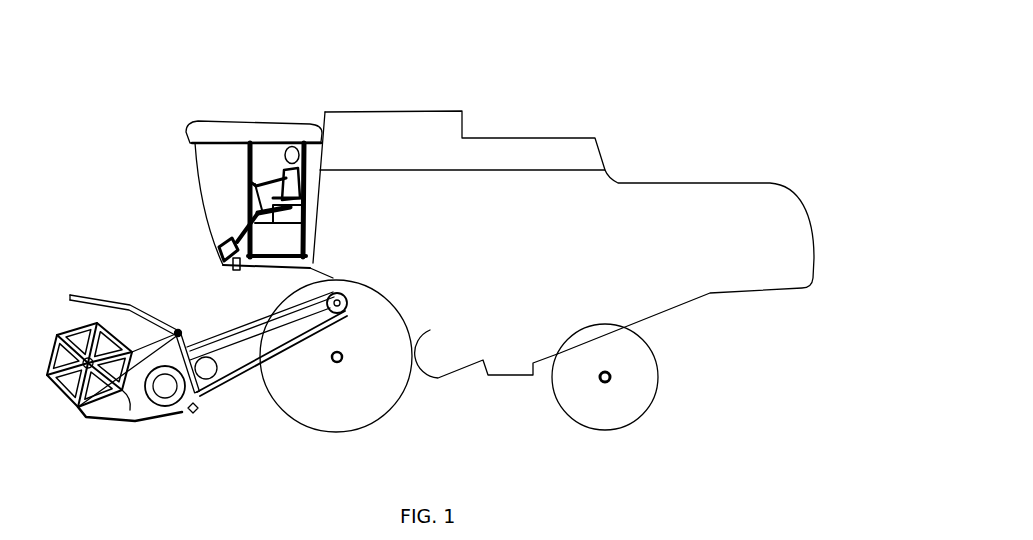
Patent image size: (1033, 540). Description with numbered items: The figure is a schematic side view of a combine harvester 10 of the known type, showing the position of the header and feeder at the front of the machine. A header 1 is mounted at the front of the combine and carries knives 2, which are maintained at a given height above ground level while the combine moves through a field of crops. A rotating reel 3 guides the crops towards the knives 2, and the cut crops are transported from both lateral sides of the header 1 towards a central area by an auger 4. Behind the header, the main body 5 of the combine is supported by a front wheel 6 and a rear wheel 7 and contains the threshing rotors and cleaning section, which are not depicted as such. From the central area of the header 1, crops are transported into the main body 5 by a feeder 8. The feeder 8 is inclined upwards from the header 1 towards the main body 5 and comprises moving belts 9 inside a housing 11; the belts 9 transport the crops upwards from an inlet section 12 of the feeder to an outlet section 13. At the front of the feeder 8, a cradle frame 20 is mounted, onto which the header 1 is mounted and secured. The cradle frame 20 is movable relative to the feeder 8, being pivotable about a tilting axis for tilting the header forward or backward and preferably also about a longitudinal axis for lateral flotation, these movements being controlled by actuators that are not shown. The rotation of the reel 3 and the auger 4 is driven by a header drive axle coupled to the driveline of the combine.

The combine harvester 10 is at (607, 95).
The header 1 is at (128, 290).
The knives 2 is at (128, 417).
The reel 3 is at (67, 332).
The auger 4 is at (166, 393).
The main body 5 is at (526, 271).
The front wheel 6 is at (387, 397).
The rear wheel 7 is at (642, 388).
The feeder 8 is at (203, 326).
The moving belts 9 is at (237, 345).
The housing 11 is at (220, 332).
The inlet section 12 is at (200, 398).
The outlet section 13 is at (350, 313).
The cradle frame 20 is at (178, 352).